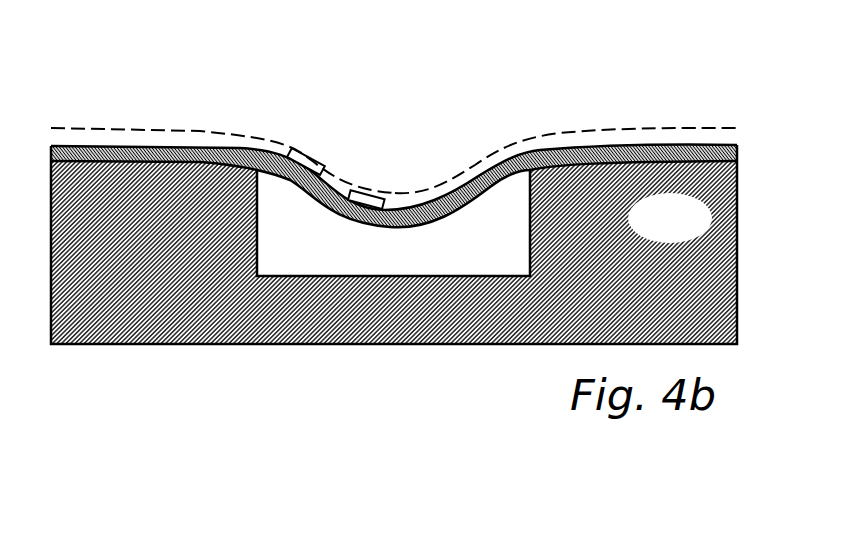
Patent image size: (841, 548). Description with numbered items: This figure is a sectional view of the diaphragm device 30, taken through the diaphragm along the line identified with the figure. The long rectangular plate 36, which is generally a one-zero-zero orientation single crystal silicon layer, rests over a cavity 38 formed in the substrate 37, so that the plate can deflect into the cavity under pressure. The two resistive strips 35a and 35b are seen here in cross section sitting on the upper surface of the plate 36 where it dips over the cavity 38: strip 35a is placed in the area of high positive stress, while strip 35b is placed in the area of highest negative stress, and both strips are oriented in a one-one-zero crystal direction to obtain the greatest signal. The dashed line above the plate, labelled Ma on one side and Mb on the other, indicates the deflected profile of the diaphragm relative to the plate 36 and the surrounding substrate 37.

The semiconductor structure 30 is at (238, 70).
The resistive strip 35a is at (305, 155).
The resistive strip 35b is at (373, 190).
The long rectangular plate 36 is at (730, 143).
The substrate 37 is at (688, 232).
The cavity 38 is at (513, 267).
The first mask region Ma is at (117, 128).
The second mask region Mb is at (663, 127).